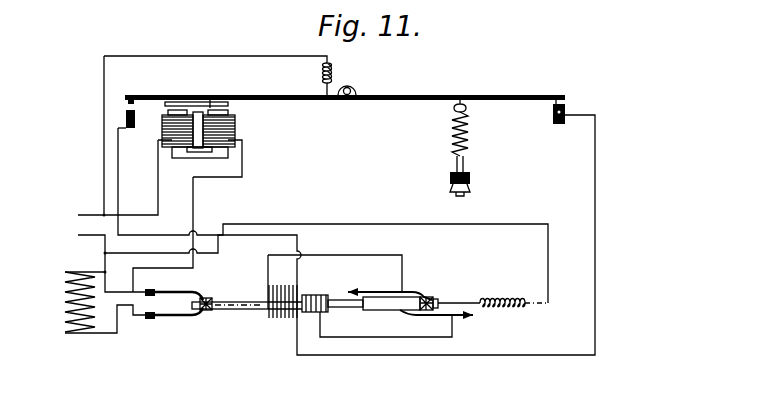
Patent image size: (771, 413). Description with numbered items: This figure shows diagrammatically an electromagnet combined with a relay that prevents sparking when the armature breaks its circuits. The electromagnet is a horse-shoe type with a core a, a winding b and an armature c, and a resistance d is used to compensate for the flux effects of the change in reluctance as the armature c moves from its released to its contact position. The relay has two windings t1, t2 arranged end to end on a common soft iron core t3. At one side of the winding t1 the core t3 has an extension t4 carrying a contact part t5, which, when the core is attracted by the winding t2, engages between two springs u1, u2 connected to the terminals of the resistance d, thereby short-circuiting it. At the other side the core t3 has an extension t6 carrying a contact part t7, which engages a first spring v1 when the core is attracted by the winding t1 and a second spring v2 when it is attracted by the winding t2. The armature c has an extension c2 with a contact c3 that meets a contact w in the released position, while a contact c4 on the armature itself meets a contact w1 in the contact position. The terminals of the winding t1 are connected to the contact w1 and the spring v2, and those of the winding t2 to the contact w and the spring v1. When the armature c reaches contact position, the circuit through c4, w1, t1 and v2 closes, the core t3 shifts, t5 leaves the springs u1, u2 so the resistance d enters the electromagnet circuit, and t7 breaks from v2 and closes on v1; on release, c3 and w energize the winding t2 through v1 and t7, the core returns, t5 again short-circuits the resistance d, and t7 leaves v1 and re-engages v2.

The core a is at (203, 108).
The winding b is at (226, 130).
The armature c is at (215, 101).
The extension c2 is at (378, 96).
The contact c3 is at (565, 97).
The contact c4 is at (125, 100).
The contact w is at (566, 114).
The contact w1 is at (125, 113).
The resistance d is at (65, 303).
The spring u1 is at (177, 291).
The spring u2 is at (178, 319).
The winding t1 is at (283, 320).
The winding t2 is at (311, 314).
The soft iron core t3 is at (330, 310).
The extension t4 is at (259, 311).
The contact part t5 is at (212, 313).
The extension t6 is at (390, 311).
The contact part t7 is at (430, 300).
The spring v1 is at (433, 317).
The spring v2 is at (407, 292).